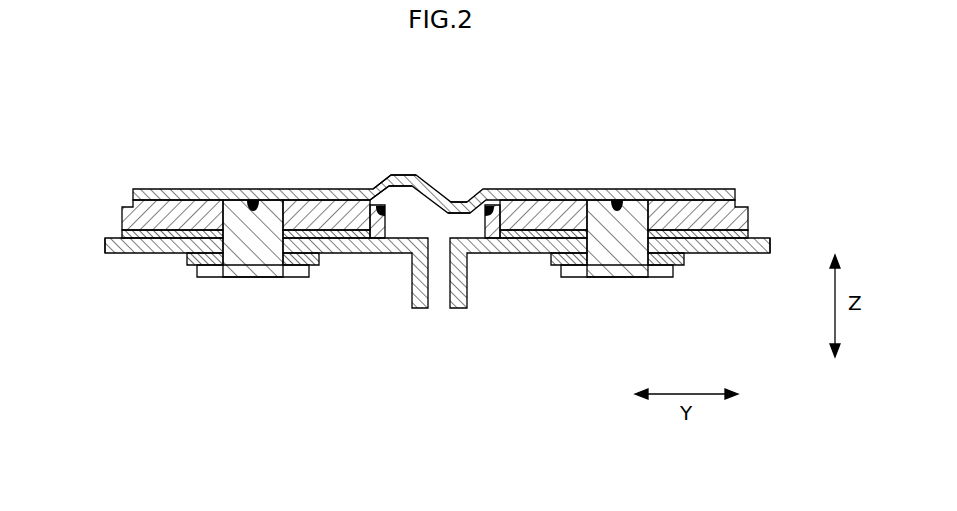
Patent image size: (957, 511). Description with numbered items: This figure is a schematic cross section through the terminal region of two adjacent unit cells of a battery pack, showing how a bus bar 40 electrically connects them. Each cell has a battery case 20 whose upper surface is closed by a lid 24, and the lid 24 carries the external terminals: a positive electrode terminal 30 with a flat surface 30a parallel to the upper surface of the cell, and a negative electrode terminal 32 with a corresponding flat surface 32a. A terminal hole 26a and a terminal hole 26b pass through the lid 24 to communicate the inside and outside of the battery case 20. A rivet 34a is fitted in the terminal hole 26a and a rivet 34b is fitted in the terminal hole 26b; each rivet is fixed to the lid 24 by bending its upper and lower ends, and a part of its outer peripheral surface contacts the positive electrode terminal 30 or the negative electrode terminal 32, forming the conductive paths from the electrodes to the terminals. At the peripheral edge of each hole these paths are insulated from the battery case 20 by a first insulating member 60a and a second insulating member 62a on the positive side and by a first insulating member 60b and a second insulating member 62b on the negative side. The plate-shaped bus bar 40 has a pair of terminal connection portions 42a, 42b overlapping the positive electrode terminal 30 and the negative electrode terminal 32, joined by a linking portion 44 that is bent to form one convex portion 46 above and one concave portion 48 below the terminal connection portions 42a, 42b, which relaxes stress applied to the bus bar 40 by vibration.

The battery case 20 is at (113, 231).
The lid 24 is at (104, 241).
The terminal hole 26a is at (230, 258).
The terminal hole 26b is at (590, 258).
The positive electrode terminal 30 is at (253, 171).
The flat surface 30a is at (168, 205).
The negative electrode terminal 32 is at (616, 171).
The flat surface 32a is at (690, 205).
The rivet 34a is at (277, 210).
The rivet 34b is at (590, 205).
The bus bar 40 is at (434, 152).
The terminal connection portion 42a is at (255, 204).
The terminal connection portion 42b is at (615, 204).
The linking portion 44 is at (415, 175).
The convex portion 46 is at (379, 187).
The concave portion 48 is at (460, 200).
The first insulating member 60a is at (186, 234).
The first insulating member 60b is at (650, 234).
The second insulating member 62a is at (306, 262).
The second insulating member 62b is at (676, 260).